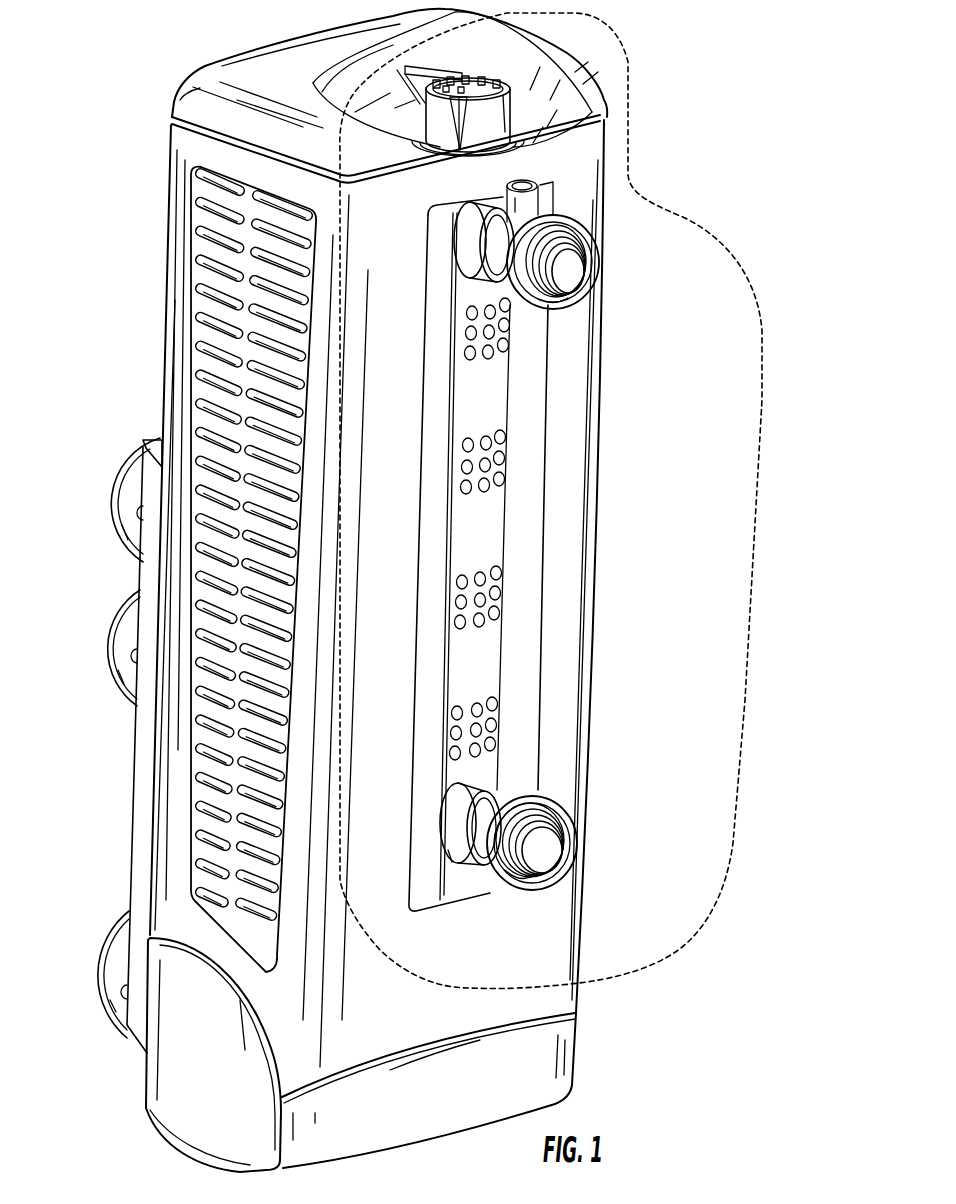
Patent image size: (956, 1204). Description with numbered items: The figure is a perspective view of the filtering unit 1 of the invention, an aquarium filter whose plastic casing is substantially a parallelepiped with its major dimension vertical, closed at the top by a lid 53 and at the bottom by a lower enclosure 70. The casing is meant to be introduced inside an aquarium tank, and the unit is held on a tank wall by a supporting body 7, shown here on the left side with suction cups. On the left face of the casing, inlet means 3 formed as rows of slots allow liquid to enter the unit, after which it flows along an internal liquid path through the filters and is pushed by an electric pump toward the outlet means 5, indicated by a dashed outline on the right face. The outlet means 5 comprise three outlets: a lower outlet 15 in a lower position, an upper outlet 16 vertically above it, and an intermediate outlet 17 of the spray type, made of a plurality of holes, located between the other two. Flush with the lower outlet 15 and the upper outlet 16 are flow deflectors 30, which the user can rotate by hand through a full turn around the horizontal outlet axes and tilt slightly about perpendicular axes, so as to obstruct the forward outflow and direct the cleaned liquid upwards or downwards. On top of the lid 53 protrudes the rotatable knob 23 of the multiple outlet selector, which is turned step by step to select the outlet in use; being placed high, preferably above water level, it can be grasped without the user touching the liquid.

The filtering unit 1 is at (133, 130).
The inlet means 3 is at (188, 372).
The outlet means 5 is at (657, 968).
The supporting body 7 is at (130, 796).
The lower outlet 15 is at (543, 820).
The upper outlet 16 is at (572, 268).
The intermediate outlet 17 is at (497, 568).
The rotatable knob 23 is at (460, 111).
The flow deflectors 30 is at (548, 308).
The lid 53 is at (268, 63).
The lower enclosure 70 is at (520, 1050).